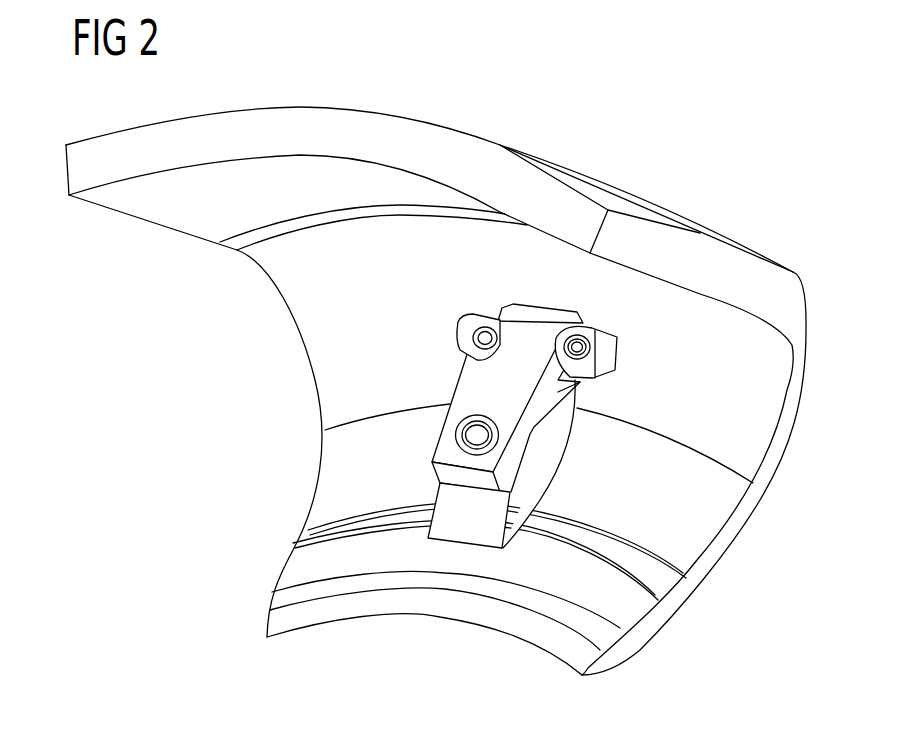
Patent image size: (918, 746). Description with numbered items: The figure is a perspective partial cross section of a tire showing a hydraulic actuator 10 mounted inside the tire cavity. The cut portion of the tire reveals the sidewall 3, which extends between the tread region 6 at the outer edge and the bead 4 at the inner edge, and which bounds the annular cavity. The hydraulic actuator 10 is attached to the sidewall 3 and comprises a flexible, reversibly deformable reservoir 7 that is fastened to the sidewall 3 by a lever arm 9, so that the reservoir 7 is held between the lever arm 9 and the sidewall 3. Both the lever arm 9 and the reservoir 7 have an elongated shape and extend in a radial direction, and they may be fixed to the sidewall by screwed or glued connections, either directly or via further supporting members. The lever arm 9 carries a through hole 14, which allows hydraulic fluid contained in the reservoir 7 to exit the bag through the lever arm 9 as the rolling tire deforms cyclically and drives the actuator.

The sidewall 3 is at (737, 525).
The bead 4 is at (615, 660).
The tread region 6 is at (632, 232).
The reservoir 7 is at (542, 477).
The lever arm 9 is at (533, 328).
The hydraulic actuator 10 is at (436, 360).
The through hole 14 is at (482, 438).